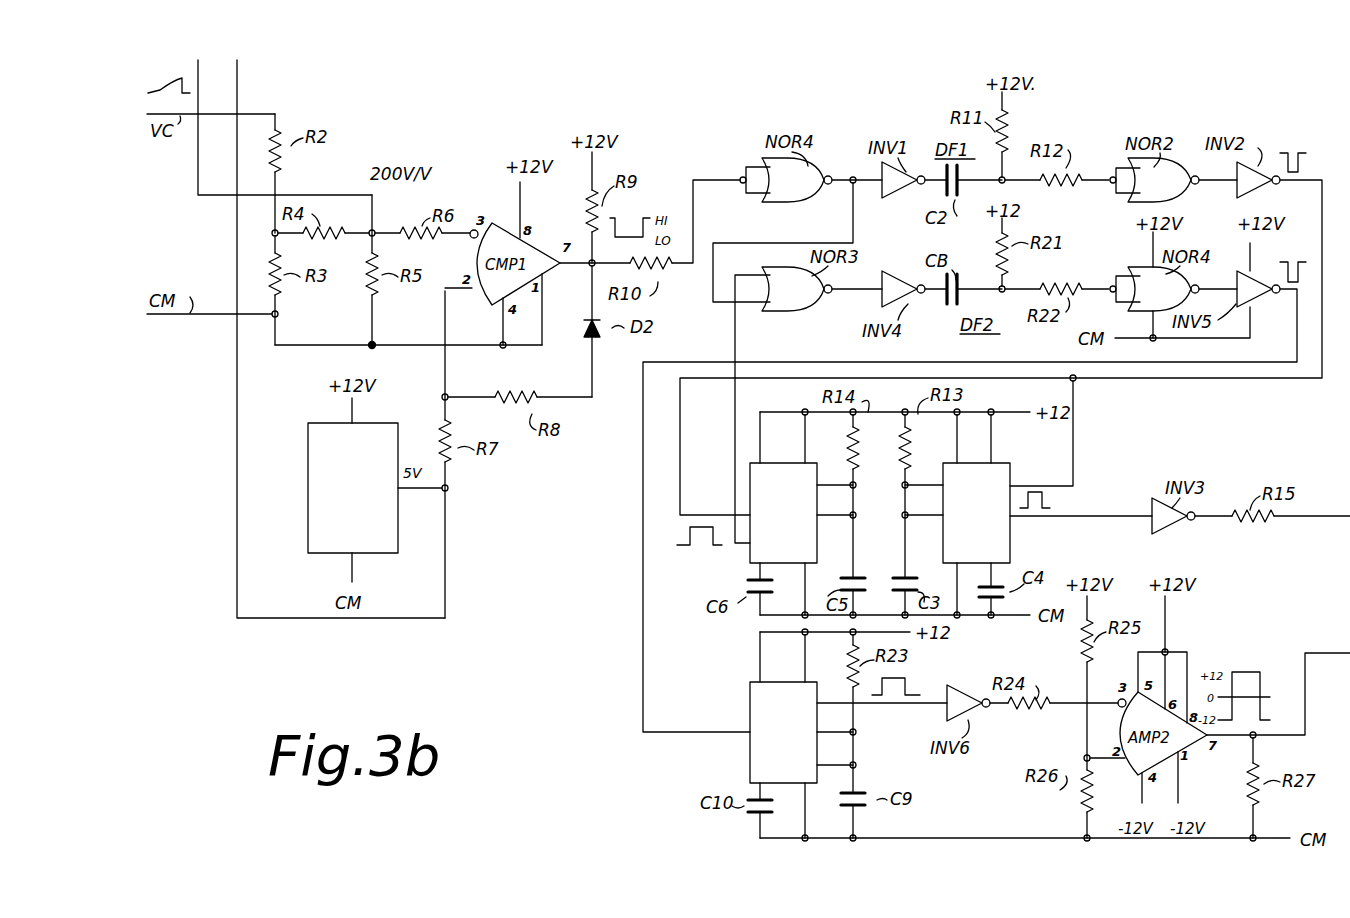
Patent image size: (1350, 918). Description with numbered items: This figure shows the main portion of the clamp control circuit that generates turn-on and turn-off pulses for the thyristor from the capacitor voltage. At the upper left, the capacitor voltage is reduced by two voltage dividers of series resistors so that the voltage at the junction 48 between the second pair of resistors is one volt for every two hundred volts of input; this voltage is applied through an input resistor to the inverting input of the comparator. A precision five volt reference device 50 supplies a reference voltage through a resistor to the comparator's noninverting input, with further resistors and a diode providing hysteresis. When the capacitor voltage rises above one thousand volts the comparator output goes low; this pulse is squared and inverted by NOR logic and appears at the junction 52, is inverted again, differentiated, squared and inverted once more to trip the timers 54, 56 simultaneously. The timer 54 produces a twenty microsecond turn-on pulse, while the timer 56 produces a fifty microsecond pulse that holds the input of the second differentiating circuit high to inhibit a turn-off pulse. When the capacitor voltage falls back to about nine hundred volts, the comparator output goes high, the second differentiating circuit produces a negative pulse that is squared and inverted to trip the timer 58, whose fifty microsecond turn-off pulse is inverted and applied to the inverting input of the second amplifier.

The junction 48 is at (376, 230).
The precision 5 volt reference device 50 is at (368, 508).
The junction 52 is at (852, 184).
The timer 54 is at (991, 536).
The timer 56 is at (800, 512).
The timer 58 is at (798, 758).